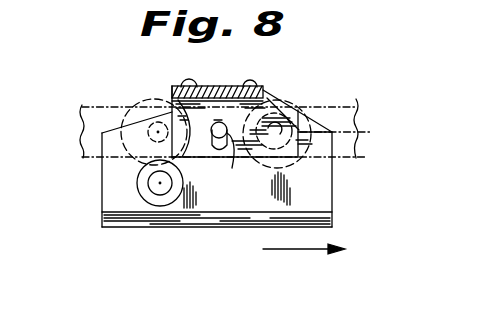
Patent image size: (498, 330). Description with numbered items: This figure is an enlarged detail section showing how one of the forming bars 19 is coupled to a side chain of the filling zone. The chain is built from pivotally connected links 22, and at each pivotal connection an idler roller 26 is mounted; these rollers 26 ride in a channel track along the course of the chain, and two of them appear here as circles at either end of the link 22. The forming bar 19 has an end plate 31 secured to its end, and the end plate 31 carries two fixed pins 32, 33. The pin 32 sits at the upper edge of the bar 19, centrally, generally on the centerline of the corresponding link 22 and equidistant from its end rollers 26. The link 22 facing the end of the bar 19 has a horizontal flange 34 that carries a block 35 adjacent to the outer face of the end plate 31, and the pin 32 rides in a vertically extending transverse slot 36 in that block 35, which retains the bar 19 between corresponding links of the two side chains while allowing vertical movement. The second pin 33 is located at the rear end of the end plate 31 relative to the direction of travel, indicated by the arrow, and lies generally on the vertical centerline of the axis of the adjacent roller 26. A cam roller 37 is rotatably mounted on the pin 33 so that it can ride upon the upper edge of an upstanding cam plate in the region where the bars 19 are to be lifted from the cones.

The forming bar 19 is at (198, 228).
The link 22 is at (100, 107).
The idler roller 26 is at (143, 162).
The end plate 31 is at (117, 197).
The pin 32 is at (230, 157).
The pin 33 is at (158, 187).
The horizontal flange 34 is at (224, 87).
The block 35 is at (369, 132).
The transverse slot 36 is at (214, 148).
The cam roller 37 is at (144, 199).